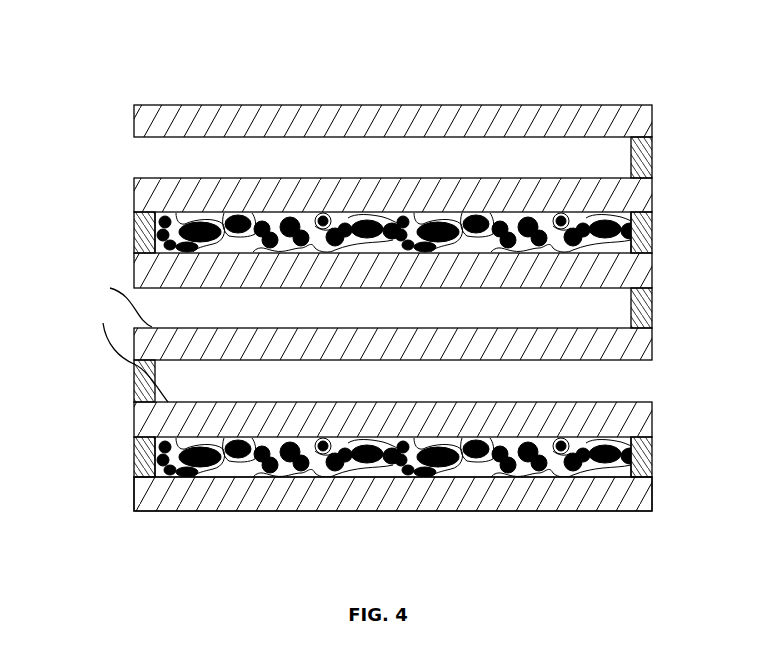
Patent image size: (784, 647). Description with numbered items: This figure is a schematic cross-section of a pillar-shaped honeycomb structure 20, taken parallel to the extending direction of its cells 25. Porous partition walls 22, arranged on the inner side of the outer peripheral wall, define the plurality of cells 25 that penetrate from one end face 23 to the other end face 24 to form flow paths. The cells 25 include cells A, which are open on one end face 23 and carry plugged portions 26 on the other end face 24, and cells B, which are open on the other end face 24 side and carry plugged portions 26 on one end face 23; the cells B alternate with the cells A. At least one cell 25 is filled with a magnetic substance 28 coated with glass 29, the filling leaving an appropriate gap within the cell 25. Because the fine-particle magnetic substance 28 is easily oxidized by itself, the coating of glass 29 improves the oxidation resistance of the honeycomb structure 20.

The honeycomb structure 20 is at (408, 70).
The porous partition walls 22 is at (618, 107).
The one end face 23 is at (134, 493).
The other end face 24 is at (652, 498).
The cells 25 is at (51, 314).
The plugged portions 26 is at (134, 235).
The magnetic substance 28 is at (398, 213).
The glass 29 is at (451, 217).